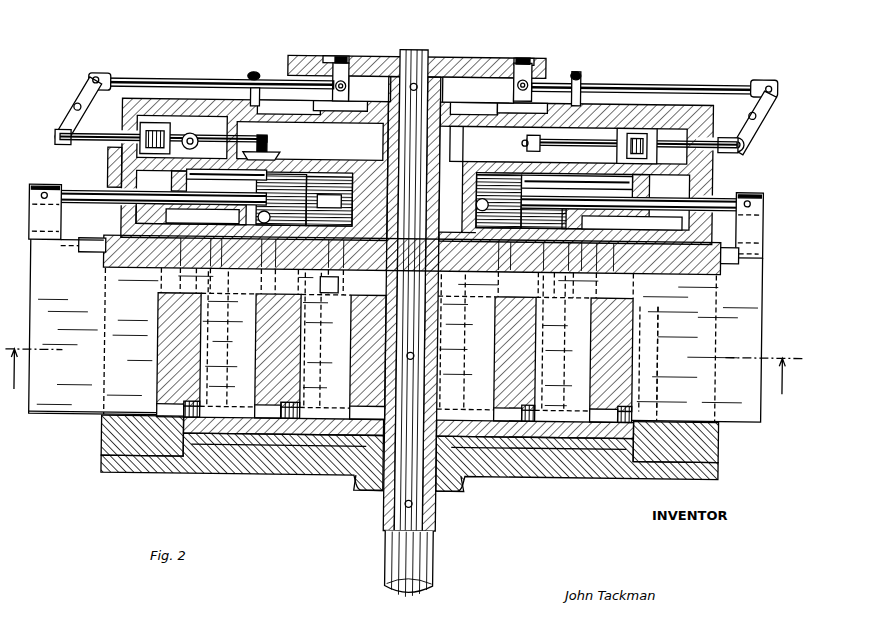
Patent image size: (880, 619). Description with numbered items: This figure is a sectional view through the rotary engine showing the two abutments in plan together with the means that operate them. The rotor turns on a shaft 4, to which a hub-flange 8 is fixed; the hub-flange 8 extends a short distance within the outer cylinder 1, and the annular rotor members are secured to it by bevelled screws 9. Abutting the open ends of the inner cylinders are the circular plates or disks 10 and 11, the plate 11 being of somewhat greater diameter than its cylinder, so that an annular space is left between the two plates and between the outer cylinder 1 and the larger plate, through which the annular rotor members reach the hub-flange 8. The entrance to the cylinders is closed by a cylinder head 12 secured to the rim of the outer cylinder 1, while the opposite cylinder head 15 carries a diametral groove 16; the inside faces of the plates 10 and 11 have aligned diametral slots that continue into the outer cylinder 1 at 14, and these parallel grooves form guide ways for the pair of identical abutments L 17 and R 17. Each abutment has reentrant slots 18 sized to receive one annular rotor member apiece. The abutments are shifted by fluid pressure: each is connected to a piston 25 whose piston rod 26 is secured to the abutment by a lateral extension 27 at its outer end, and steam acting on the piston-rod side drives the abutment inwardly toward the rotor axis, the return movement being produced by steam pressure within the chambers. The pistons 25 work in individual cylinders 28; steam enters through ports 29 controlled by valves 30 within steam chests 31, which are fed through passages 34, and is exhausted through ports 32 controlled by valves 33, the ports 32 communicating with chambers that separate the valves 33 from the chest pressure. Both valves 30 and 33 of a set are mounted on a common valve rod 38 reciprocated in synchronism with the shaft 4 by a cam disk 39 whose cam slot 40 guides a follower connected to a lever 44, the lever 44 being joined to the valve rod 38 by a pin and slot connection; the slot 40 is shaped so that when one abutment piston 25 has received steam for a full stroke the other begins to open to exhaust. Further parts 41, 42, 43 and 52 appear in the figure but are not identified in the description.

The outer cylinder 1 is at (404, 380).
The rotor shaft 4 is at (415, 50).
The hub-flange 8 is at (487, 470).
The bevelled screws 9 is at (283, 470).
The circular plate or disk 10 is at (362, 476).
The circular plate or disk 11 is at (215, 472).
The cylinder head 12 is at (100, 472).
The groove continuation 14 is at (160, 410).
The opposite cylinder head 15 is at (135, 268).
The diametral groove 16 is at (350, 282).
The abutments 17 is at (396, 330).
The reentrant portions or slots 18 is at (358, 136).
The pistons 25 is at (389, 200).
The piston rods 26 is at (70, 190).
The lateral extensions 27 is at (30, 232).
The piston cylinders 28 is at (436, 203).
The steam inlet ports 29 is at (270, 168).
The inlet valves 30 is at (262, 150).
The steam chests 31 is at (370, 143).
The exhaust ports 32 is at (196, 126).
The exhaust valves 33 is at (165, 122).
The steam supply passages 34 is at (250, 72).
The valve rod 38 is at (104, 143).
The cam disk 39 is at (482, 57).
The cam slot 40 is at (332, 55).
The clamp block 41 is at (349, 85).
The bearing block 42 is at (266, 98).
The upper rod 43 is at (125, 78).
The lever 44 is at (83, 84).
The bracket 52 is at (78, 254).